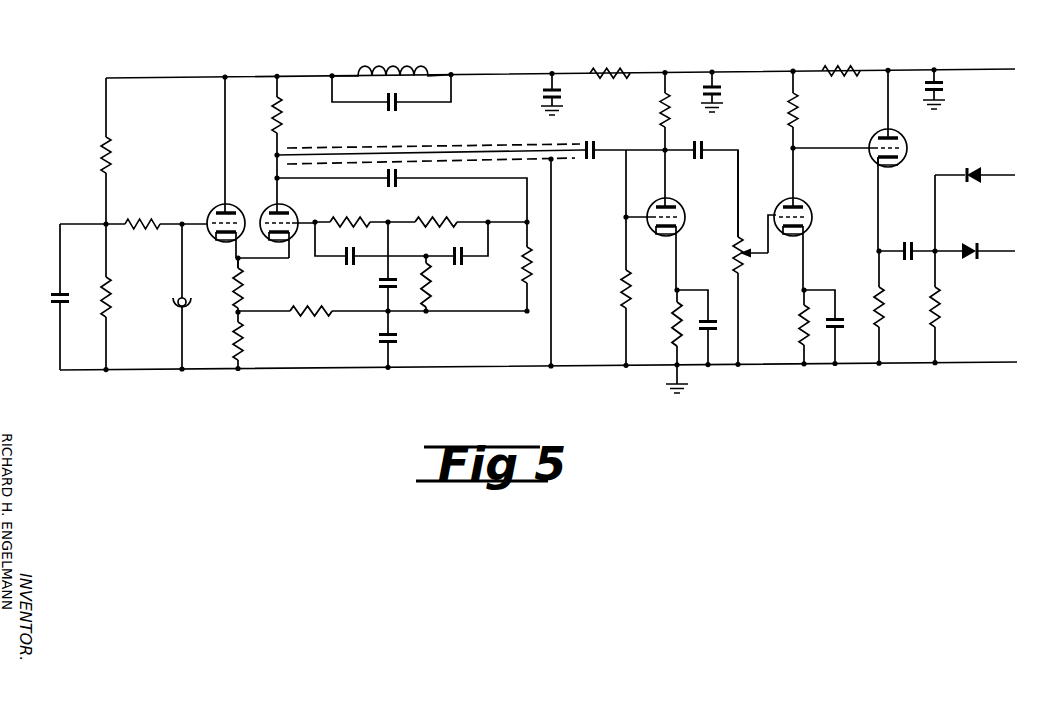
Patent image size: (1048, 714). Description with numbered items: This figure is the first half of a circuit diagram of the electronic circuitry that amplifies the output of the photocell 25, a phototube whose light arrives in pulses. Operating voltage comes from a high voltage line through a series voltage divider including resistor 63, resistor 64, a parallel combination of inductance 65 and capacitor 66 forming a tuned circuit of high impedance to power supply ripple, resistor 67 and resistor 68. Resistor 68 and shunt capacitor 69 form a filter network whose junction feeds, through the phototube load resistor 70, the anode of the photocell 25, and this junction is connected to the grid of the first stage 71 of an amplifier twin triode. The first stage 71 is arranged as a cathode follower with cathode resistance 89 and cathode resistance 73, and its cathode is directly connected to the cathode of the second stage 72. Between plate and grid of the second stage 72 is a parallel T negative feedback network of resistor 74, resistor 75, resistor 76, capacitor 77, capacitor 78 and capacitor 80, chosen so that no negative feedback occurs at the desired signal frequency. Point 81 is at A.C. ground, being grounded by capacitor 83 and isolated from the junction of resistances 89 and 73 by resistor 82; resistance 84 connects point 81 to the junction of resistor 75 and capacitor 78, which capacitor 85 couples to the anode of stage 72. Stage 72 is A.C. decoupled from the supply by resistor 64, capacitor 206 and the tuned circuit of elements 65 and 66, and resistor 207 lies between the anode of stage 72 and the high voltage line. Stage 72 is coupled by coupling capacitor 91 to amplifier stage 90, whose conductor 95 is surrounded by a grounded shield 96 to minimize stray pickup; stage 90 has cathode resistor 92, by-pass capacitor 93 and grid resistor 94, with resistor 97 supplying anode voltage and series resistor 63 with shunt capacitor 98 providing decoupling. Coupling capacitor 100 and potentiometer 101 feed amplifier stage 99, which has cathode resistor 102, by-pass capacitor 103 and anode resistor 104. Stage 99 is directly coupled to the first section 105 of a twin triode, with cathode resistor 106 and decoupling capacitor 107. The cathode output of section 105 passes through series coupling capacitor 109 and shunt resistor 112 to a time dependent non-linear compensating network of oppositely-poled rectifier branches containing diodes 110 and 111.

The photocell 25 is at (172, 315).
The voltage divider resistor 63 is at (842, 68).
The voltage divider resistor 64 is at (612, 70).
The inductance 65 is at (394, 69).
The capacitor 66 is at (386, 106).
The resistor 67 is at (98, 156).
The resistor 68 is at (118, 294).
The shunt capacitor 69 is at (52, 291).
The phototube load resistor 70 is at (142, 222).
The first stage of amplifier twin triode 71 is at (212, 208).
The second stage 72 is at (294, 206).
The cathode resistance 73 is at (230, 340).
The resistor 74 is at (348, 220).
The resistor 75 is at (443, 220).
The resistor 76 is at (428, 289).
The capacitor 77 is at (342, 263).
The capacitor 78 is at (449, 252).
The capacitor 80 is at (383, 291).
The point 81 is at (394, 313).
The resistor 82 is at (305, 318).
The capacitor 83 is at (396, 345).
The resistance 84 is at (522, 277).
The capacitor 85 is at (398, 184).
The cathode resistance 89 is at (232, 291).
The amplifier stage 90 is at (658, 241).
The coupling capacitor 91 is at (597, 148).
The cathode resistor 92 is at (674, 323).
The by-pass capacitor 93 is at (710, 317).
The grid resistor 94 is at (622, 293).
The conductor 95 is at (400, 151).
The grounded shield 96 is at (530, 163).
The resistor 97 is at (656, 117).
The shunt capacitor 98 is at (724, 100).
The amplifier stage 99 is at (816, 233).
The coupling capacitor 100 is at (703, 156).
The potentiometer 101 is at (752, 263).
The cathode resistor 102 is at (800, 327).
The by-pass capacitor 103 is at (840, 312).
The resistor 104 is at (802, 108).
The first section of twin triode 105 is at (865, 157).
The cathode resistor 106 is at (892, 312).
The capacitor 107 is at (947, 100).
The series coupling capacitor 109 is at (892, 240).
The diode 110 is at (978, 172).
The diode 111 is at (980, 256).
The shunt resistor 112 is at (943, 306).
The capacitor 206 is at (541, 101).
The resistor 207 is at (285, 113).